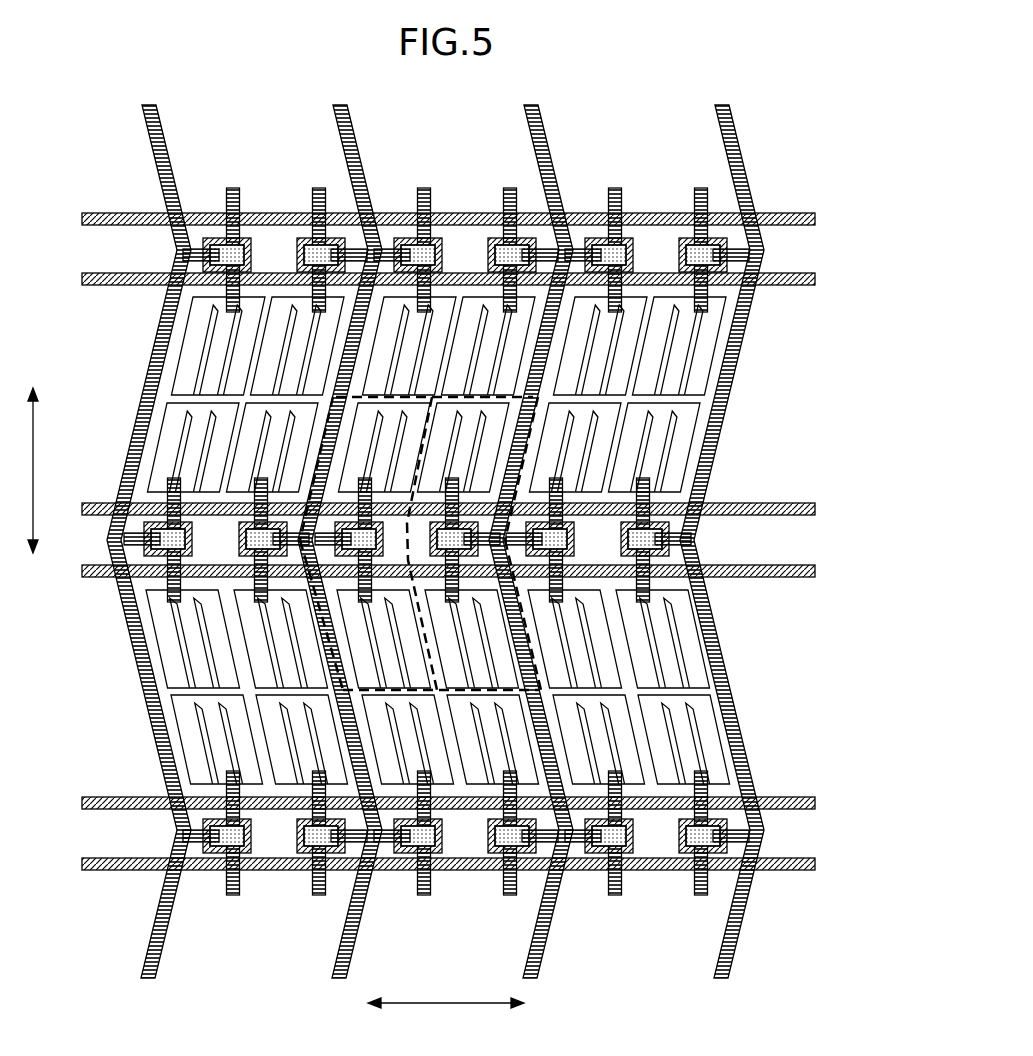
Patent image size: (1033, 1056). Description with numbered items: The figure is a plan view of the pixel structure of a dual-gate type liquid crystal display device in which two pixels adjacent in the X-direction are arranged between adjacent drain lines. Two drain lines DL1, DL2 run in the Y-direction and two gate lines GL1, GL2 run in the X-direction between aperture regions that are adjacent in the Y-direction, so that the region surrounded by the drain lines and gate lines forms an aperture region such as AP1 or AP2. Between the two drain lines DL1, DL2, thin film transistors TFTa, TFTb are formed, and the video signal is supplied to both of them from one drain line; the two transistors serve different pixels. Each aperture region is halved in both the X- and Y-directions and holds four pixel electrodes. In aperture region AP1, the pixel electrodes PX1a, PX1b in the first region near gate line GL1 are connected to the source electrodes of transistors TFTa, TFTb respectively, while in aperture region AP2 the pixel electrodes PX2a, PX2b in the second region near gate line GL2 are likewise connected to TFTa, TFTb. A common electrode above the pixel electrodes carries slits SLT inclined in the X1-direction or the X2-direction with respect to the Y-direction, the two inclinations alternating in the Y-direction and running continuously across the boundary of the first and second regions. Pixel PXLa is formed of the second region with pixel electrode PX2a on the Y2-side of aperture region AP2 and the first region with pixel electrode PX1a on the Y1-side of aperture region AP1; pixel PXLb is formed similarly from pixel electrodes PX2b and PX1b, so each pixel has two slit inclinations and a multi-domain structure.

The drain line DL1 is at (343, 155).
The drain line DL2 is at (552, 158).
The gate line GL1 is at (795, 212).
The gate line GL2 is at (773, 287).
The pixel electrode PX1a is at (385, 420).
The pixel electrode PX1b is at (475, 420).
The pixel electrode PX2a is at (385, 650).
The pixel electrode PX2b is at (475, 650).
The aperture region AP1 is at (360, 373).
The aperture region AP2 is at (360, 713).
The slit SLT is at (675, 443).
The thin film transistor TFTa is at (335, 558).
The thin film transistor TFTb is at (480, 560).
The pixel PXLa is at (325, 637).
The pixel PXLb is at (533, 673).
The X1-direction X1 is at (393, 1005).
The X2-direction X2 is at (506, 1005).
The Y1-side Y1 is at (32, 530).
The Y2-side Y2 is at (32, 412).